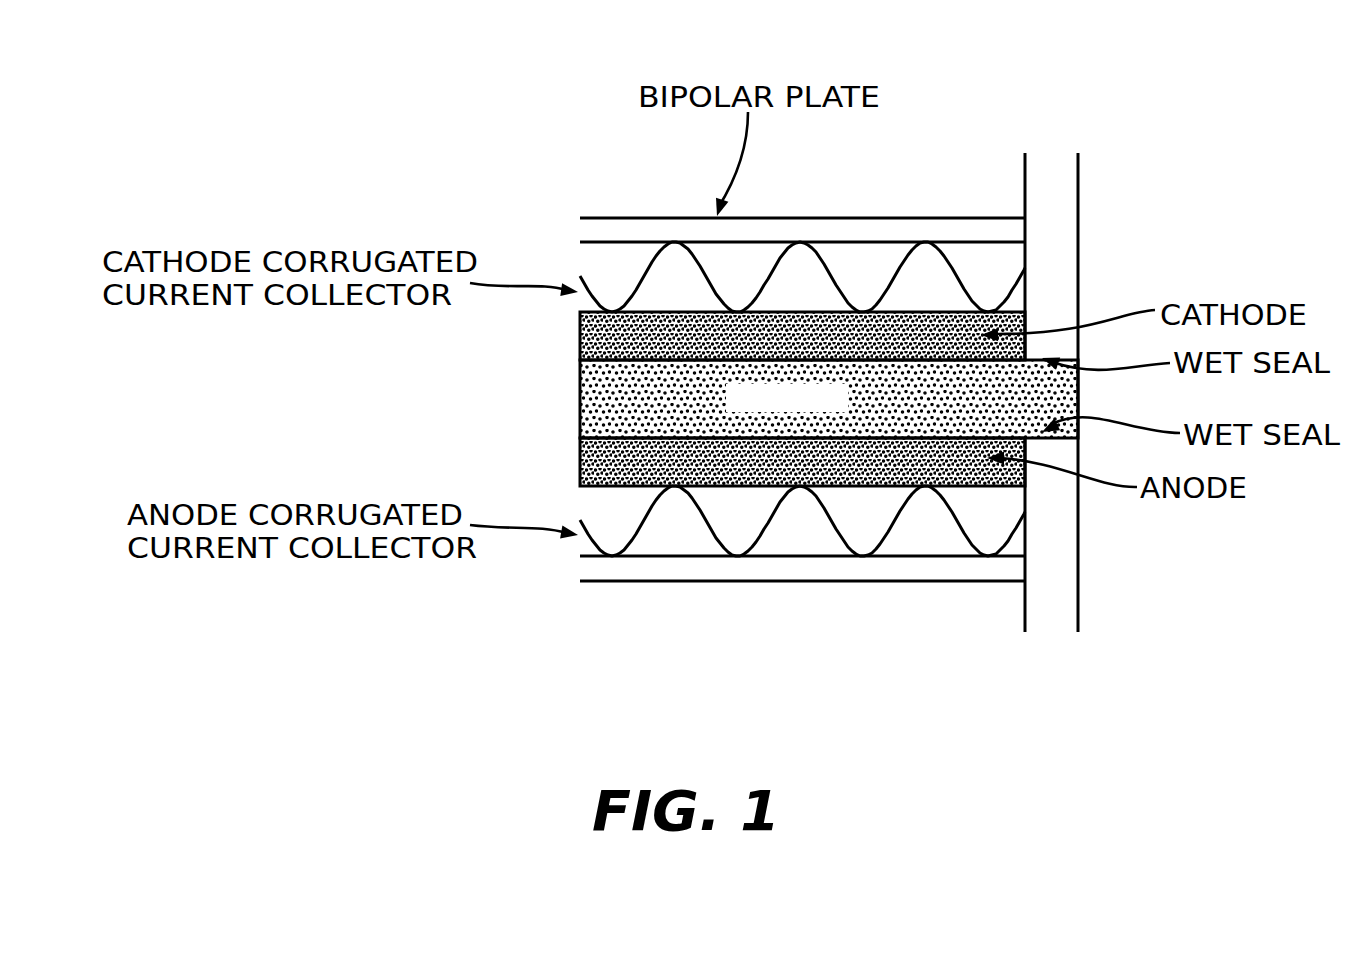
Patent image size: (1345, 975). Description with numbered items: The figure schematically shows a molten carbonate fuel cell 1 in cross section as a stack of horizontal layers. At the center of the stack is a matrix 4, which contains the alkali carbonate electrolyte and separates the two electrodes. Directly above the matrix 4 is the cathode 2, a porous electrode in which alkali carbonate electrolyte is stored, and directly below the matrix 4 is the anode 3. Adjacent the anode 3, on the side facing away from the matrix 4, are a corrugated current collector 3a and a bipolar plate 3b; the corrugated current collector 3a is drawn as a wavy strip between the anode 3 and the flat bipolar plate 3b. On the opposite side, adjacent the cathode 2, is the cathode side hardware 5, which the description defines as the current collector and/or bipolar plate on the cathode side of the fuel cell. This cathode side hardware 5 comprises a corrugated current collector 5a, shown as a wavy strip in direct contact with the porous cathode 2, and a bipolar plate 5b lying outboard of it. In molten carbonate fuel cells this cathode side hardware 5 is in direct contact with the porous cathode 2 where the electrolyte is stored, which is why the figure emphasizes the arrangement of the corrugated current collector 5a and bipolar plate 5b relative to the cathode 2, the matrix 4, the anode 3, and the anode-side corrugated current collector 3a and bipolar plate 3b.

The fuel cell 1 is at (945, 140).
The cathode 2 is at (1007, 318).
The anode 3 is at (967, 475).
The corrugated current collector 3a is at (963, 533).
The bipolar plate 3b is at (792, 570).
The matrix 4 is at (1022, 395).
The cathode side hardware 5 is at (649, 212).
The corrugated current collector 5a is at (837, 268).
The bipolar plate 5b is at (792, 225).